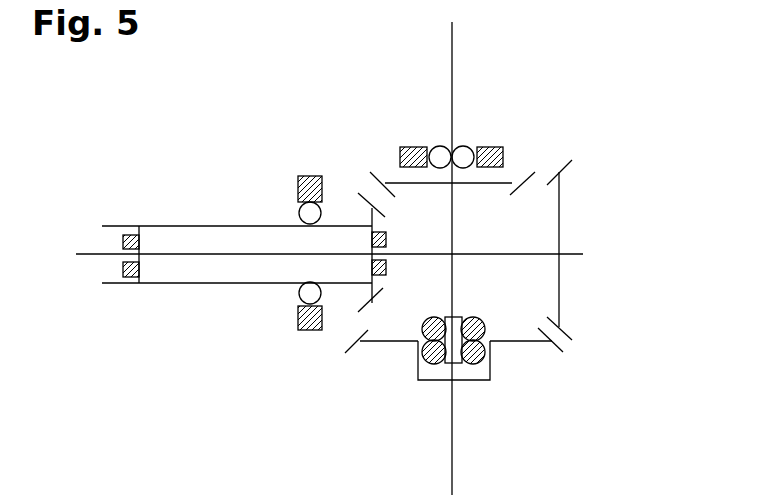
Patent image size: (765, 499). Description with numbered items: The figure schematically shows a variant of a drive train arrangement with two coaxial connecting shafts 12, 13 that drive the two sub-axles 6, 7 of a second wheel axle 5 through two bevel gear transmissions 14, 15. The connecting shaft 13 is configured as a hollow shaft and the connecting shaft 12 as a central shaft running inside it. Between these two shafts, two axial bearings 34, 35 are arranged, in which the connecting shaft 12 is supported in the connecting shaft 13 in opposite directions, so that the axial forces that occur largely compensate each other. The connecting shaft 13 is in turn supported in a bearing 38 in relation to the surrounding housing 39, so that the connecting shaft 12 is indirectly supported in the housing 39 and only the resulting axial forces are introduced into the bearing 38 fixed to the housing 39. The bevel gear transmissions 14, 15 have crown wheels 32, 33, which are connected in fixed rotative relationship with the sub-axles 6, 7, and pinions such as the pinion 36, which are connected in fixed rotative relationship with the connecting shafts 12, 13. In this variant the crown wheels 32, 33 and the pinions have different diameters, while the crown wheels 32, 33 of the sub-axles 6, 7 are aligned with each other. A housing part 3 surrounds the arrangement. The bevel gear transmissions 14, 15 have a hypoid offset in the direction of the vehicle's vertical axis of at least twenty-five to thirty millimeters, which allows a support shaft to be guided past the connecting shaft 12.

The housing 3 is at (370, 300).
The second wheel axle 5 is at (567, 121).
The sub-axle 6 is at (453, 50).
The sub-axle 7 is at (453, 472).
The connecting shaft 12 is at (86, 258).
The connecting shaft 13 is at (195, 226).
The bevel gear transmission 14 is at (350, 164).
The bevel gear transmission 15 is at (598, 362).
The crown wheel 32 is at (513, 180).
The crown wheel 33 is at (512, 343).
The axial bearing 34 is at (133, 297).
The axial bearing 35 is at (402, 276).
The pinion 36 is at (559, 272).
The bearing 38 is at (300, 293).
The housing 39 is at (308, 331).